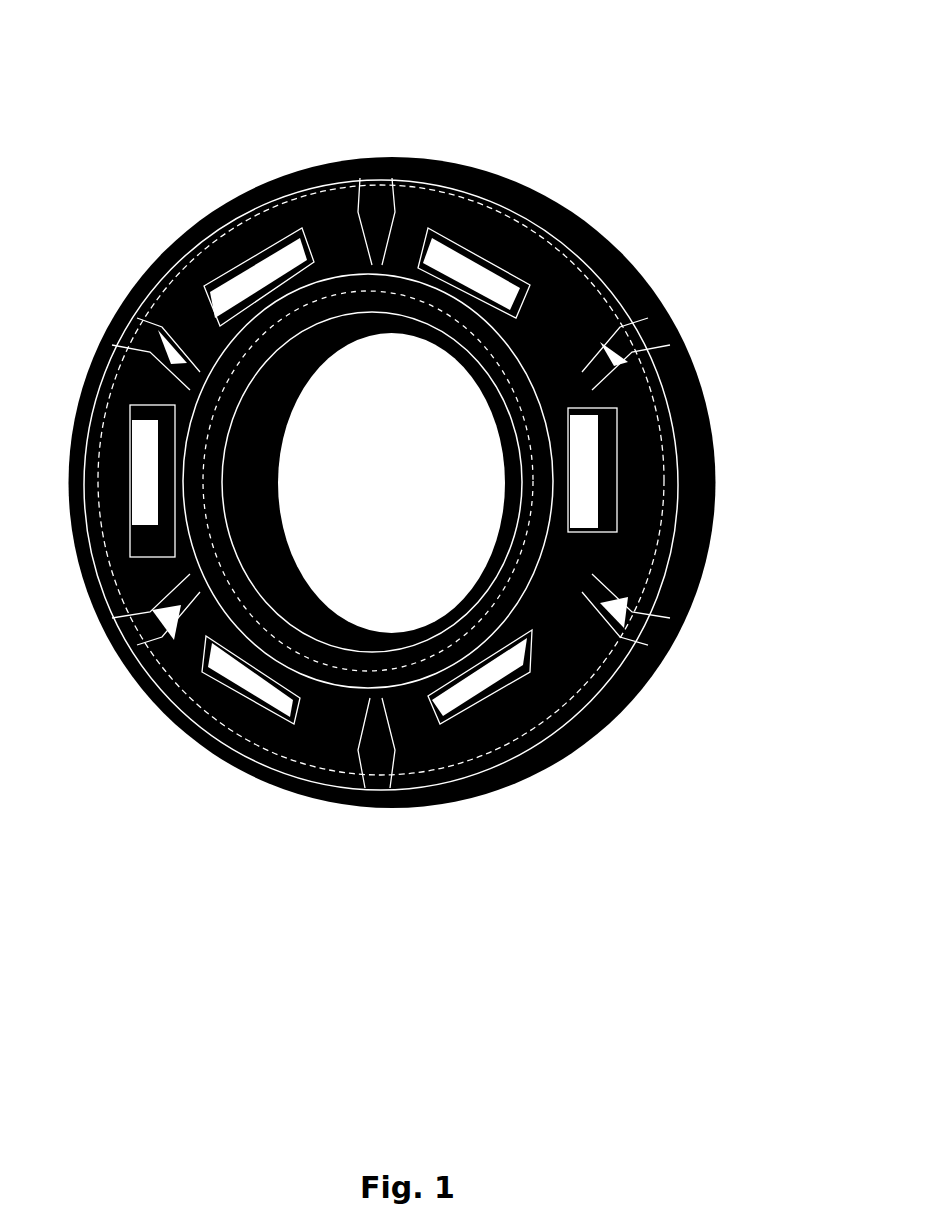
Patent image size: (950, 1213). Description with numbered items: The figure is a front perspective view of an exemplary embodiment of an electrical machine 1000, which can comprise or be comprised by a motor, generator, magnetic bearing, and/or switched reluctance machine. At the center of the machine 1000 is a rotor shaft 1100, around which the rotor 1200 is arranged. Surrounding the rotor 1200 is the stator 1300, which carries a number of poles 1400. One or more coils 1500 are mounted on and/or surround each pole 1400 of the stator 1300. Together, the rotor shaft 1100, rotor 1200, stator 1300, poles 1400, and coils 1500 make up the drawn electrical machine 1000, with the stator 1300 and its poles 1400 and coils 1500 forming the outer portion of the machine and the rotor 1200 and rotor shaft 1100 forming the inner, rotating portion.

The electrical machine 1000 is at (88, 50).
The rotor shaft 1100 is at (237, 562).
The rotor 1200 is at (240, 612).
The stator 1300 is at (620, 380).
The pole 1400 is at (517, 267).
The coil 1500 is at (583, 473).